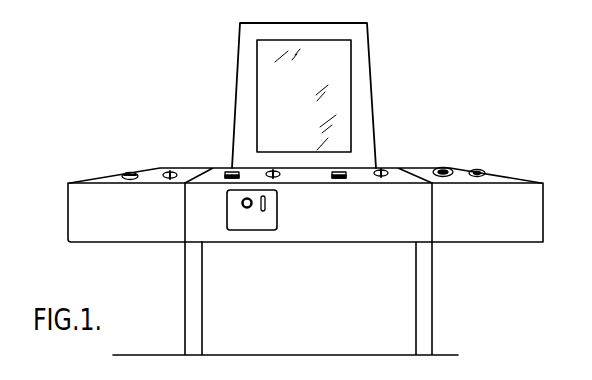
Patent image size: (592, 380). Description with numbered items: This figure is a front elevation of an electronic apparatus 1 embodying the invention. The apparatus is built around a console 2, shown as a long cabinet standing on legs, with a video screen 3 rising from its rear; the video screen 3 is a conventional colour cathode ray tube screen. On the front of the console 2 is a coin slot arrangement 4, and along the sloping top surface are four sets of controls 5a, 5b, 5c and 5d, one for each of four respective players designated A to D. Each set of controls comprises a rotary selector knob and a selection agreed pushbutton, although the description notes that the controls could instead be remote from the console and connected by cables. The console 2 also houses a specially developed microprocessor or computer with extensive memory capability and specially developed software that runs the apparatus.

The electronic apparatus 1 is at (309, 189).
The console 2 is at (135, 230).
The video screen 3 is at (340, 86).
The coin slot arrangement 4 is at (248, 220).
The set of controls 5a is at (152, 172).
The set of controls 5b is at (252, 175).
The set of controls 5c is at (364, 176).
The set of controls 5d is at (459, 167).